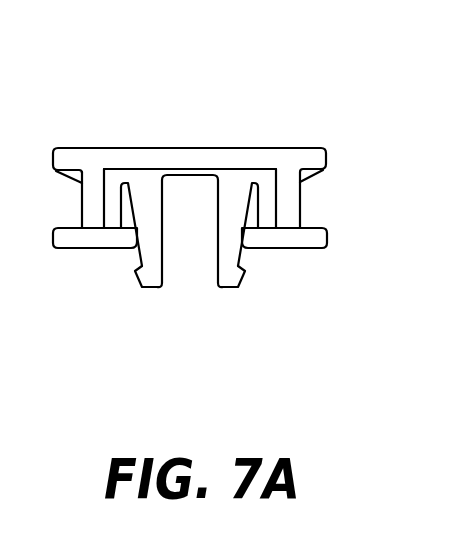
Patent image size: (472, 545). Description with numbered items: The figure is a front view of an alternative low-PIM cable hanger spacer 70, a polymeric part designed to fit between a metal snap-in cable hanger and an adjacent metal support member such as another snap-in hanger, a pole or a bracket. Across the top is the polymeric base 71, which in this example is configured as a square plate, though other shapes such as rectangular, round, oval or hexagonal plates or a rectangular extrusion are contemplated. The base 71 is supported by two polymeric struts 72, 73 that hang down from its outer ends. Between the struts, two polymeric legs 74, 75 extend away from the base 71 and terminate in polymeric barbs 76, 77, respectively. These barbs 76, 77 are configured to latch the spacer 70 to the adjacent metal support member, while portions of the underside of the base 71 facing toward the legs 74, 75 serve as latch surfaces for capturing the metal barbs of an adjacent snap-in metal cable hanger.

The low-PIM cable hanger spacer 70 is at (210, 190).
The polymeric base 71 is at (139, 151).
The polymeric strut 72 is at (78, 233).
The polymeric strut 73 is at (298, 232).
The polymeric leg 74 is at (117, 297).
The polymeric leg 75 is at (266, 288).
The polymeric barb 76 is at (150, 267).
The polymeric barb 77 is at (222, 267).